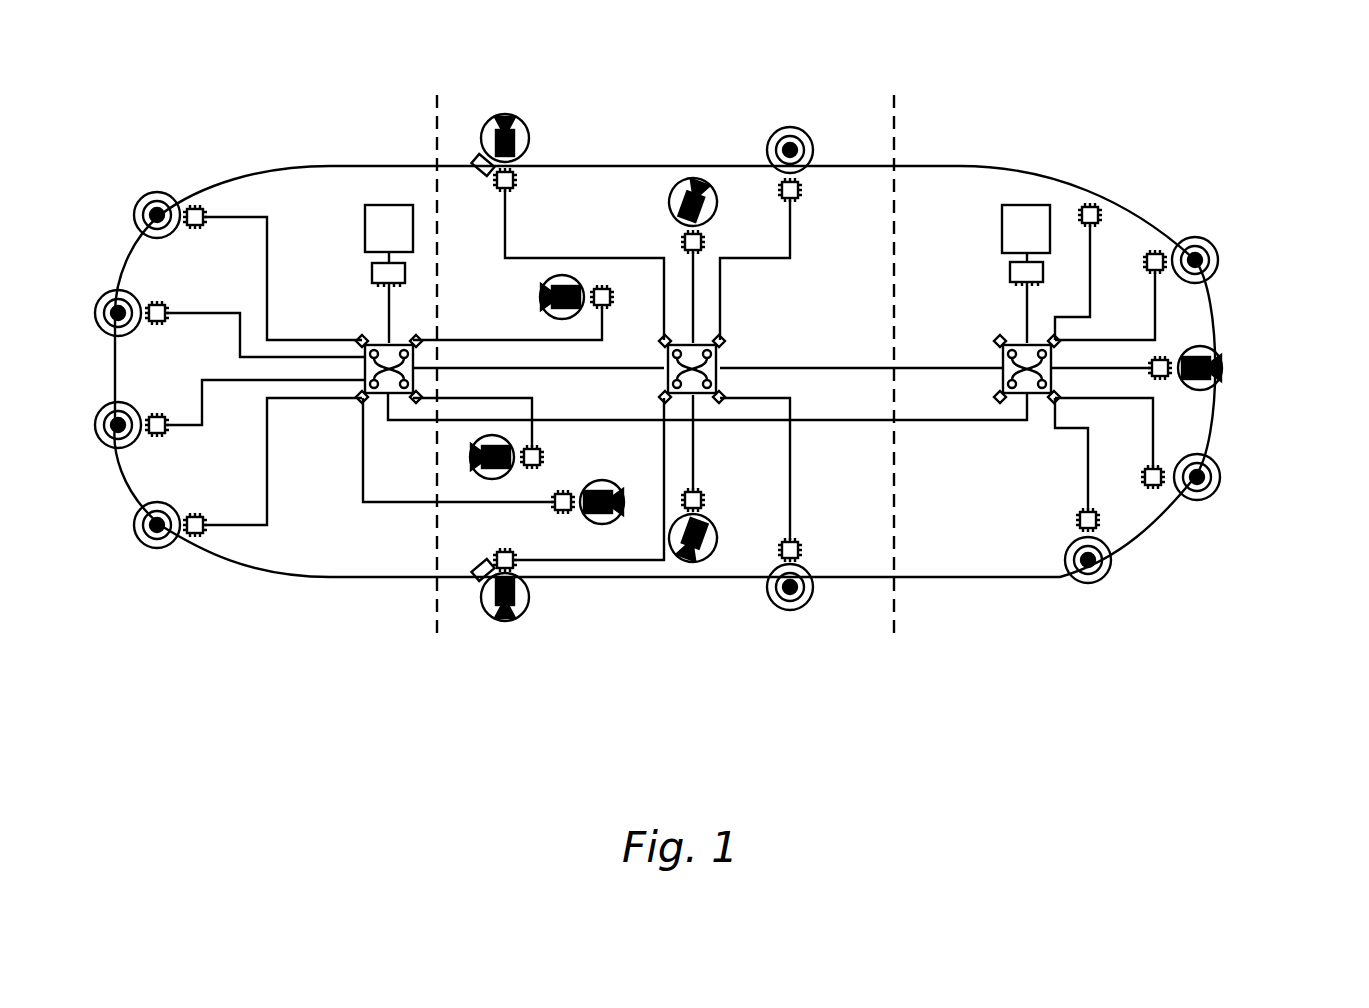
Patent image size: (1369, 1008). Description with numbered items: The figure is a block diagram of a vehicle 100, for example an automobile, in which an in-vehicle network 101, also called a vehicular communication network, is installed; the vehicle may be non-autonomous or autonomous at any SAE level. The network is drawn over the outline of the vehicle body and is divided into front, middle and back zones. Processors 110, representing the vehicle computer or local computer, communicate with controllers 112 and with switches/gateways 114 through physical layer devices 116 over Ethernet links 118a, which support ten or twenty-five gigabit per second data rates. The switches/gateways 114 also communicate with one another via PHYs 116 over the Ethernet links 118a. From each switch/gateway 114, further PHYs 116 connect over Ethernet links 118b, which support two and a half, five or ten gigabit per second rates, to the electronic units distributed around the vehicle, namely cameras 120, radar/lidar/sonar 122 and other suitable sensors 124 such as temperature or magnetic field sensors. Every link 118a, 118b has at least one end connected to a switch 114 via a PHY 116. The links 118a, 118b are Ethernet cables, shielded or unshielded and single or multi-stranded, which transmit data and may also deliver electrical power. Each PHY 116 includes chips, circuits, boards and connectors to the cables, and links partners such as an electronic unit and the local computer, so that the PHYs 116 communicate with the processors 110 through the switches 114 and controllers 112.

The vehicle 100 is at (240, 126).
The in-vehicle network 101 is at (820, 232).
The processors 110 is at (389, 205).
The controllers 112 is at (372, 272).
The switches/gateways 114 is at (374, 400).
The physical layer devices 116 is at (192, 205).
The Ethernet links 118a is at (389, 312).
The Ethernet links 118b is at (268, 235).
The cameras 120 is at (505, 113).
The radar/lidar/sonar 122 is at (145, 195).
The sensors 124 is at (1090, 203).